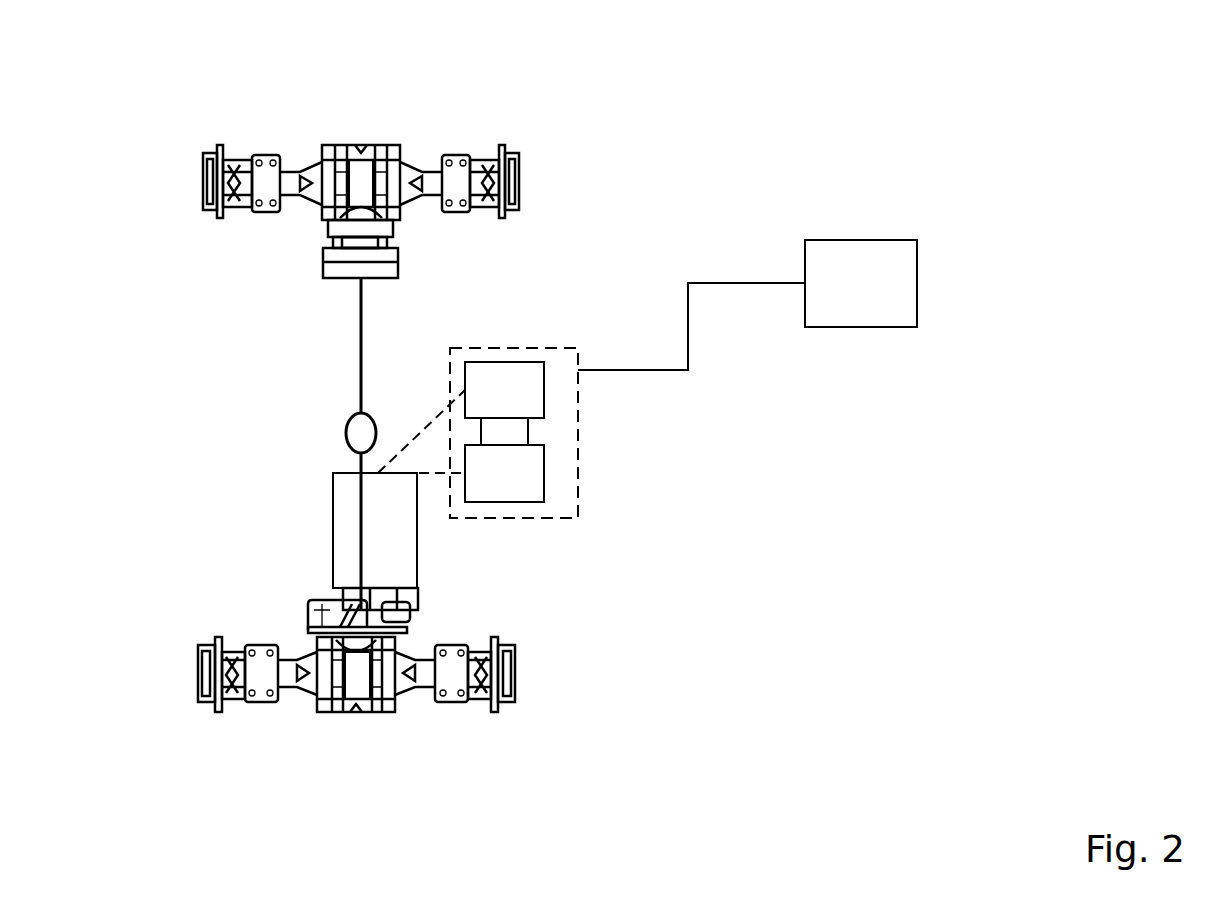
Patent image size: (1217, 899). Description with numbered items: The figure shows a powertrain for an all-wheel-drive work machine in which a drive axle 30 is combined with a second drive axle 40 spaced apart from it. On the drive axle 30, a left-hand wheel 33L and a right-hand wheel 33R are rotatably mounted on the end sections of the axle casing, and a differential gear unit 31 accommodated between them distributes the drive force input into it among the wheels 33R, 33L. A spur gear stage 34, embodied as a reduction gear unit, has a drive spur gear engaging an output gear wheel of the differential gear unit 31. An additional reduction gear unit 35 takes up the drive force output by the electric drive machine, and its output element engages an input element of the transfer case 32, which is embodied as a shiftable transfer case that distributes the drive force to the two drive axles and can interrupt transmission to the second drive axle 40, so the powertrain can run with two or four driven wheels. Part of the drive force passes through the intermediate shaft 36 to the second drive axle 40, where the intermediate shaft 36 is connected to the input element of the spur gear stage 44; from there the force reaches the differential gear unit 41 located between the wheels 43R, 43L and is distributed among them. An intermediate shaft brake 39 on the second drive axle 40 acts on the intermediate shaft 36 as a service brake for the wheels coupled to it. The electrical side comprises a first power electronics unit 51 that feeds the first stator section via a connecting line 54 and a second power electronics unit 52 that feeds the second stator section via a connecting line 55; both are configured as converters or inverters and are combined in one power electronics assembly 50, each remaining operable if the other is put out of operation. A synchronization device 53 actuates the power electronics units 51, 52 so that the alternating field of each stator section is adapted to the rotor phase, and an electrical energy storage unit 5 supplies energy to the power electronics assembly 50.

The electrical energy storage unit 5 is at (892, 283).
The drive axle 30 is at (347, 720).
The differential gear unit 31 is at (357, 712).
The transfer case 32 is at (320, 610).
The left-hand wheel 33L is at (217, 712).
The right-hand wheel 33R is at (496, 710).
The spur gear stage 34 is at (420, 692).
The additional reduction gear unit 35 is at (408, 597).
The intermediate shaft 36 is at (360, 323).
The intermediate shaft brake 39 is at (333, 271).
The second drive axle 40 is at (347, 141).
The differential gear unit 41 is at (362, 148).
The wheel 43L is at (220, 143).
The wheel 43R is at (500, 140).
The spur gear stage 44 is at (350, 220).
The power electronics assembly 50 is at (578, 413).
The first power electronics unit 51 is at (510, 378).
The second power electronics unit 52 is at (520, 478).
The synchronization device 53 is at (528, 432).
The connecting line 54 is at (430, 423).
The connecting line 55 is at (425, 472).